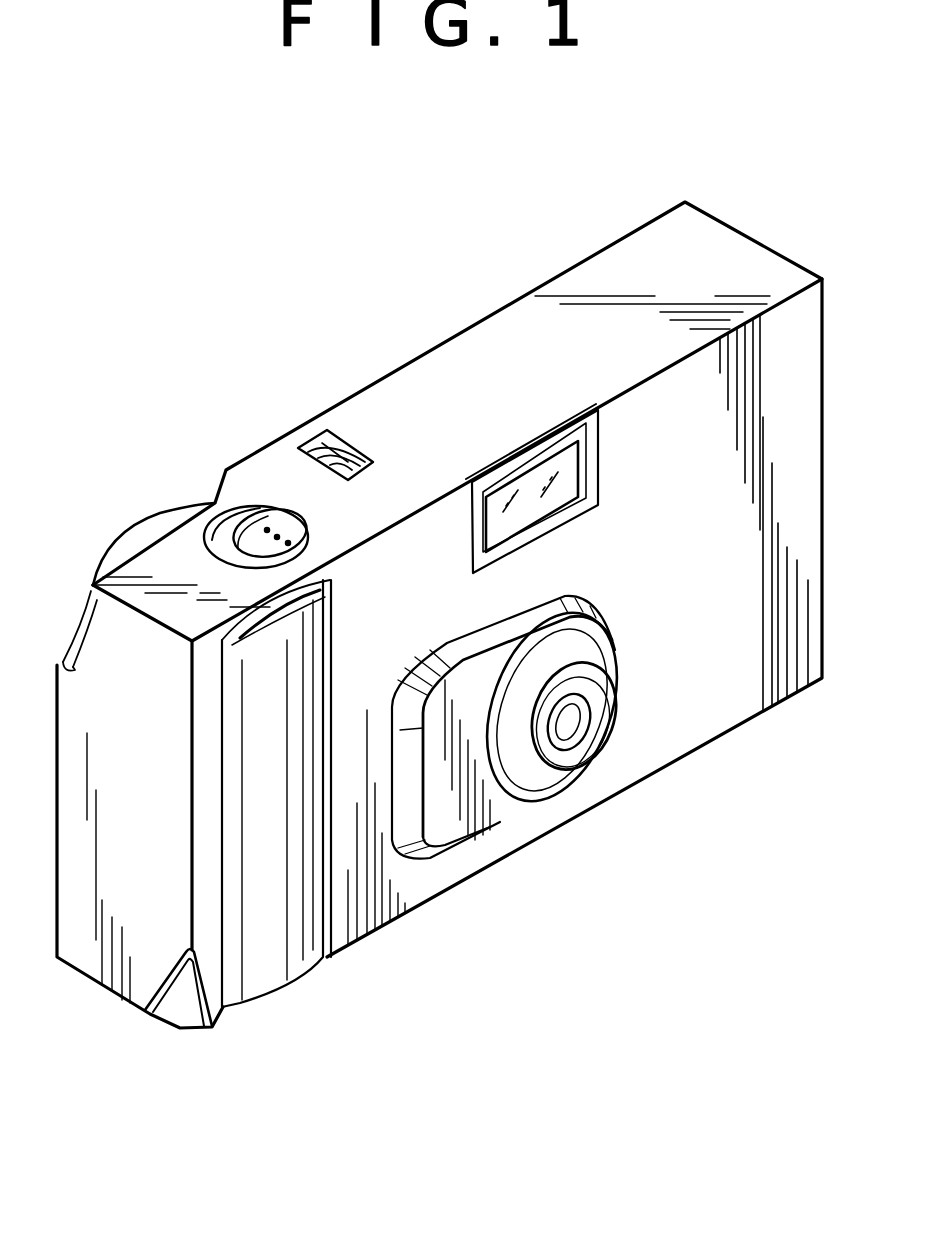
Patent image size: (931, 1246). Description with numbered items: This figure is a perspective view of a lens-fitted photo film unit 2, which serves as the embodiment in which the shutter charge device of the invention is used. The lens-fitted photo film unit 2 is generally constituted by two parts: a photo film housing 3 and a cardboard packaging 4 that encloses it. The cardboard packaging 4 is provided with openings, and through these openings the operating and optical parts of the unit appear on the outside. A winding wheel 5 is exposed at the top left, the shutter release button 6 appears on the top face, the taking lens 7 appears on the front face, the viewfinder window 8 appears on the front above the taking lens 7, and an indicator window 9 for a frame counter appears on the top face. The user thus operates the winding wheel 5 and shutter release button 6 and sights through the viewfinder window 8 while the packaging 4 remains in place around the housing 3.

The lens-fitted photo film unit 2 is at (148, 911).
The photo film housing 3 is at (192, 1024).
The cardboard packaging 4 is at (133, 962).
The winding wheel 5 is at (120, 548).
The shutter release button 6 is at (300, 520).
The taking lens 7 is at (570, 713).
The viewfinder window 8 is at (560, 483).
The indicator window 9 is at (367, 442).